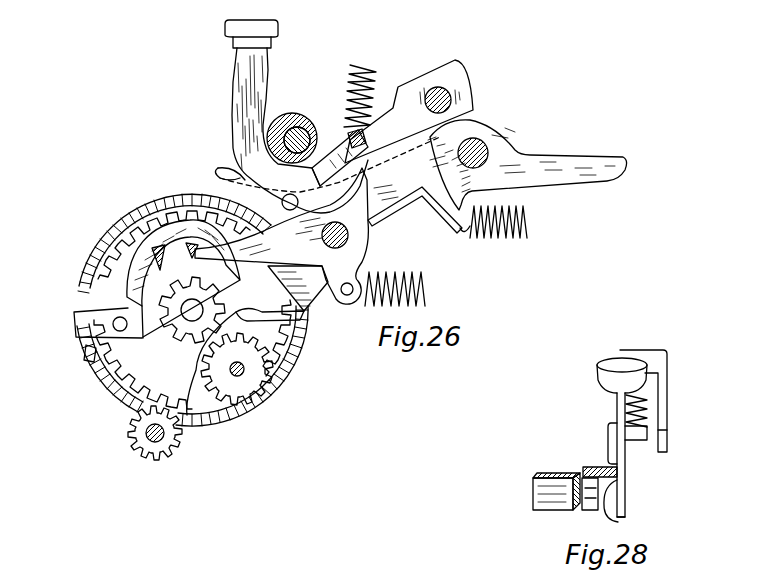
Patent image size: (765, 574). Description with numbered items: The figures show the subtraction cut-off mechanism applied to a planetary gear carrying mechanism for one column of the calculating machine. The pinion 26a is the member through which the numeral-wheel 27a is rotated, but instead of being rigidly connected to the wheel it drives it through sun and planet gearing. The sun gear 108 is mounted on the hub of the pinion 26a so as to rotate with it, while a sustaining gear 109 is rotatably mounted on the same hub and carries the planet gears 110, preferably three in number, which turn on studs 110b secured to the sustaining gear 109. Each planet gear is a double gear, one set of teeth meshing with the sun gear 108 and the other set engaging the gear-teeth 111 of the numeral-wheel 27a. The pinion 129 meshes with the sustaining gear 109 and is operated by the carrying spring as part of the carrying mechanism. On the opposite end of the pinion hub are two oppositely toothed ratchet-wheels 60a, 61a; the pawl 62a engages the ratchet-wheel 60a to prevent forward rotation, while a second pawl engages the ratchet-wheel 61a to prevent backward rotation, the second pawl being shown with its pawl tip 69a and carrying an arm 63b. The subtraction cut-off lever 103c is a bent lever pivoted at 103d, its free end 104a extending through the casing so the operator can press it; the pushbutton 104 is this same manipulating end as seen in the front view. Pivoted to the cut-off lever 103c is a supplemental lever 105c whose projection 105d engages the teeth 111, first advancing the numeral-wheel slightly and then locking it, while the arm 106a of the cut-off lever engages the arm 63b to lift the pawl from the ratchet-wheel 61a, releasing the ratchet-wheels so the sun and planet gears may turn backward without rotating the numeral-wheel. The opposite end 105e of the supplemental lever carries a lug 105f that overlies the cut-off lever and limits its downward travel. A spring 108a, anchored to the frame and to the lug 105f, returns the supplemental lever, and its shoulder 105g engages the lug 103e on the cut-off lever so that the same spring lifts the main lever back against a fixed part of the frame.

In FIG. 26, the free end 104a is at (234, 52).
In FIG. 26, the lug 105f is at (352, 76).
In FIG. 28, the lug 105f is at (636, 440).
In FIG. 26, the spring 108a is at (395, 85).
In FIG. 28, the spring 108a is at (648, 398).
In FIG. 26, the pivot 103d is at (466, 82).
In FIG. 26, the shoulder 105g is at (346, 137).
In FIG. 26, the lug 103e is at (295, 122).
In FIG. 28, the lug 103e is at (608, 450).
In FIG. 26, the opposite end 105e is at (345, 150).
In FIG. 28, the opposite end 105e is at (610, 428).
In FIG. 26, the supplemental lever 105c is at (224, 168).
In FIG. 28, the supplemental lever 105c is at (625, 519).
In FIG. 26, the projection 105d is at (218, 168).
In FIG. 28, the projection 105d is at (603, 467).
In FIG. 26, the subtraction cut-off lever 103c is at (260, 187).
In FIG. 28, the subtraction cut-off lever 103c is at (652, 356).
In FIG. 26, the pawl 62a is at (174, 247).
In FIG. 26, the pawl 69a is at (195, 250).
In FIG. 26, the ratchet-wheel 61a is at (85, 310).
In FIG. 26, the ratchet-wheel 60a is at (86, 350).
In FIG. 26, the sustaining gear 109 is at (110, 353).
In FIG. 26, the numeral-wheel 27a is at (118, 393).
In FIG. 28, the numeral-wheel 27a is at (533, 485).
In FIG. 26, the pinion 26a is at (183, 338).
In FIG. 26, the sun gear 108 is at (312, 342).
In FIG. 26, the studs 110b is at (276, 380).
In FIG. 26, the planet gears 110 is at (252, 398).
In FIG. 26, the gear-teeth 111 is at (220, 425).
In FIG. 28, the gear-teeth 111 is at (590, 510).
In FIG. 26, the pinion 129 is at (155, 453).
In FIG. 26, the arm 63b is at (368, 222).
In FIG. 26, the arm 106a is at (392, 210).
In FIG. 28, the arm 106a is at (667, 448).
In FIG. 28, the push button 104 is at (612, 390).